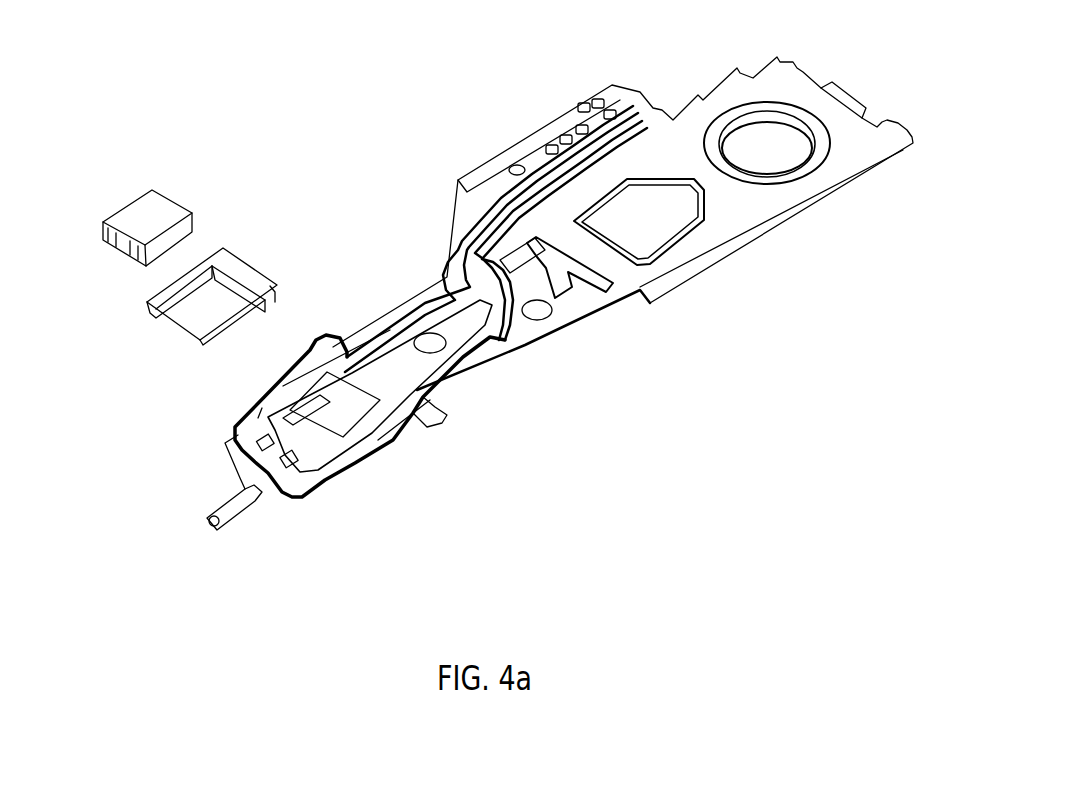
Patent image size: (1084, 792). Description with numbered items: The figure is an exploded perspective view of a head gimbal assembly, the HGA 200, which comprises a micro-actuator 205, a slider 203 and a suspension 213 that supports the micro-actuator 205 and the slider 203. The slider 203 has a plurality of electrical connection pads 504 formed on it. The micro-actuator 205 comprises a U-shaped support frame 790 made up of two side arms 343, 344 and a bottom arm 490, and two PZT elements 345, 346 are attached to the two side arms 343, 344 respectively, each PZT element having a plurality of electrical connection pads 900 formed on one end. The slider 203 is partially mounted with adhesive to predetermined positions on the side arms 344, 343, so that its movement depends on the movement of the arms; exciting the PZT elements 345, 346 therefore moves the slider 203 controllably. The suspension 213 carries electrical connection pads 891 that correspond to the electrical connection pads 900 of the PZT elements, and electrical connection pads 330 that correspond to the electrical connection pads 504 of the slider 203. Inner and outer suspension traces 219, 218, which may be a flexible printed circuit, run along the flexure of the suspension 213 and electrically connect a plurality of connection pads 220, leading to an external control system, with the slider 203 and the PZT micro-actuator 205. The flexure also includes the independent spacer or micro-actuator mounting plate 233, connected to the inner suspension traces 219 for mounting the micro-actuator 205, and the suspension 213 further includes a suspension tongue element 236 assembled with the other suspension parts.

The HGA 200 is at (345, 74).
The slider 203 is at (113, 220).
The micro-actuator 205 is at (236, 240).
The suspension 213 is at (710, 218).
The outer suspension trace 218 is at (450, 413).
The inner suspension trace 219 is at (398, 382).
The connection pads 220 is at (588, 106).
The micro-actuator mounting plate 233 is at (342, 407).
The suspension tongue element 236 is at (325, 437).
The electrical connection pads 330 is at (270, 457).
The side arm 343 is at (188, 283).
The side arm 344 is at (213, 317).
The PZT element 345 is at (232, 320).
The PZT element 346 is at (182, 273).
The bottom arm 490 is at (240, 267).
The electrical connection pads 504 is at (118, 256).
The U-shaped support frame 790 is at (268, 268).
The electrical connection pads 891 is at (283, 386).
The electrical connection pads 900 is at (273, 290).